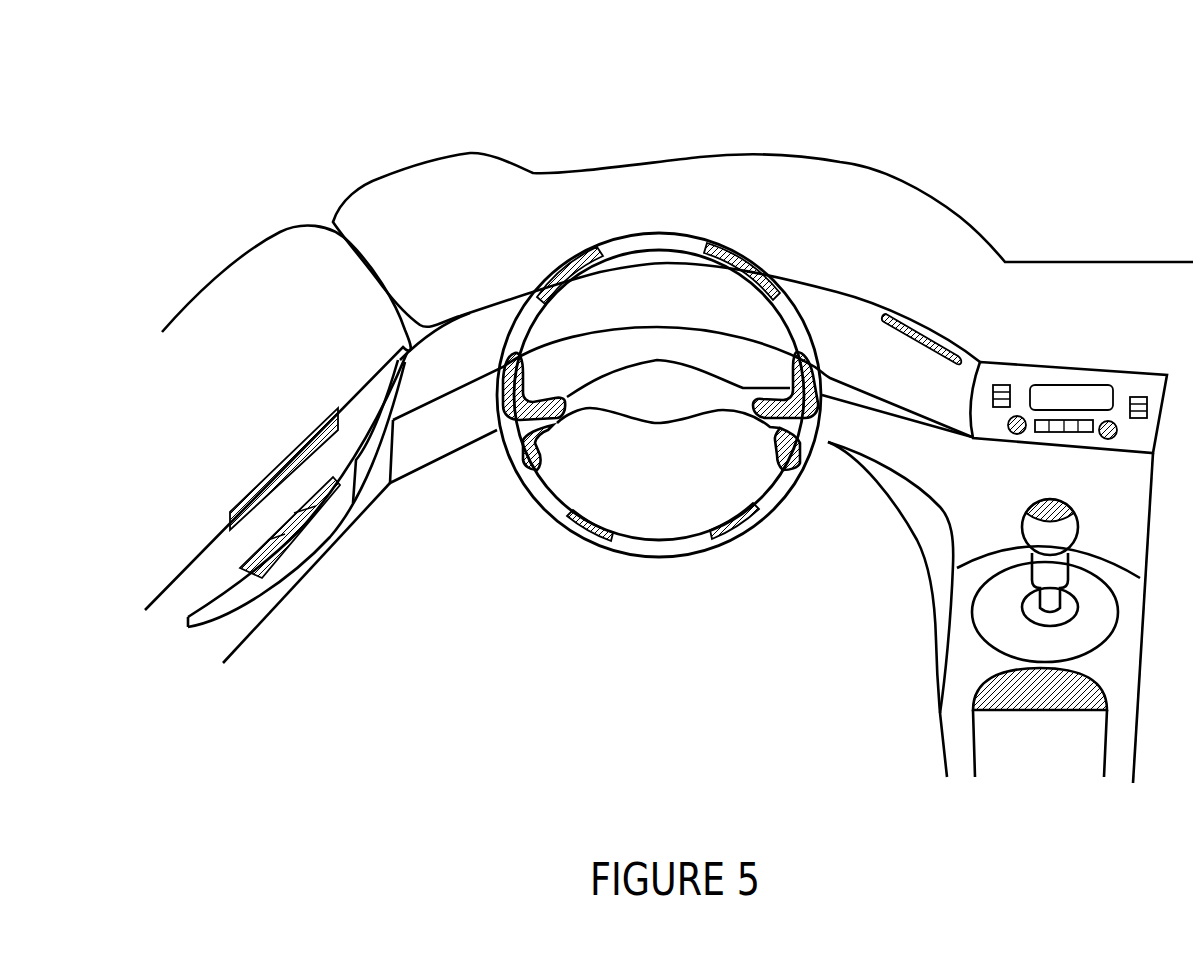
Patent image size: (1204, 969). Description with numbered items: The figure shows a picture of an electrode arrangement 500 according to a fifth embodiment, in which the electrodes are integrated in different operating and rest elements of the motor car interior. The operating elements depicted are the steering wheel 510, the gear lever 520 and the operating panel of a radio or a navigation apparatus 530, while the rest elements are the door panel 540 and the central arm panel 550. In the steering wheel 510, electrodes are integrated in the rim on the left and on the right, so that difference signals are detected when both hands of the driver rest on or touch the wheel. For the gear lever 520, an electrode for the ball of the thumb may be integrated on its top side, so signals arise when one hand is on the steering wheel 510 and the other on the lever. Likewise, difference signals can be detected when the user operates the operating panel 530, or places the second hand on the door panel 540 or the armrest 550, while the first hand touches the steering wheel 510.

The electrode arrangement 500 is at (912, 145).
The steering wheel 510 is at (748, 246).
The gear lever 520 is at (1040, 497).
The operating panel of a radio or a navigation apparatus 530 is at (1017, 414).
The door panel 540 is at (257, 477).
The central arm panel 550 is at (1096, 672).